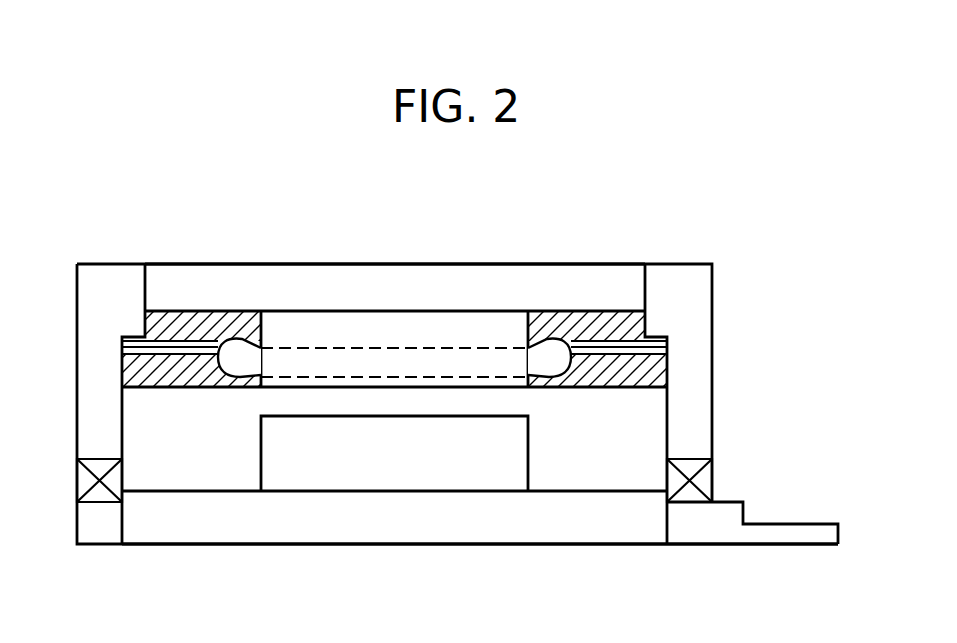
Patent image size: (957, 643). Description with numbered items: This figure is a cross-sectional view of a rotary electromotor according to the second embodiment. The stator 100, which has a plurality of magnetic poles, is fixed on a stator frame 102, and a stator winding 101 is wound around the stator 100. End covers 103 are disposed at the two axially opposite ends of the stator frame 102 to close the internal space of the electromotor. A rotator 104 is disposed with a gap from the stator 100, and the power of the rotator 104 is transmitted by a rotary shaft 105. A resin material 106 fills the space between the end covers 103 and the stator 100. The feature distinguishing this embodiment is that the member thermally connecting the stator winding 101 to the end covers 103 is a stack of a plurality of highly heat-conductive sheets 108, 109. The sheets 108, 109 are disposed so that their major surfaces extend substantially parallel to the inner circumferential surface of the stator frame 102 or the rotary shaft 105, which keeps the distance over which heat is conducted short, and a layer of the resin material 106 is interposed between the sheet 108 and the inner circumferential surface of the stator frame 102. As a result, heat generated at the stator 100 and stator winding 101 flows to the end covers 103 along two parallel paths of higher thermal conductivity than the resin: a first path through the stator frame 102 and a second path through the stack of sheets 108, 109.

The stator 100 is at (394, 346).
The stator winding 101 is at (515, 366).
The stator frame 102 is at (493, 284).
The end covers 103 is at (106, 280).
The rotator 104 is at (394, 453).
The rotary shaft 105 is at (480, 517).
The resin material 106 is at (203, 340).
The highly heat-conductive sheet 108 is at (160, 345).
The highly heat-conductive sheet 109 is at (205, 350).